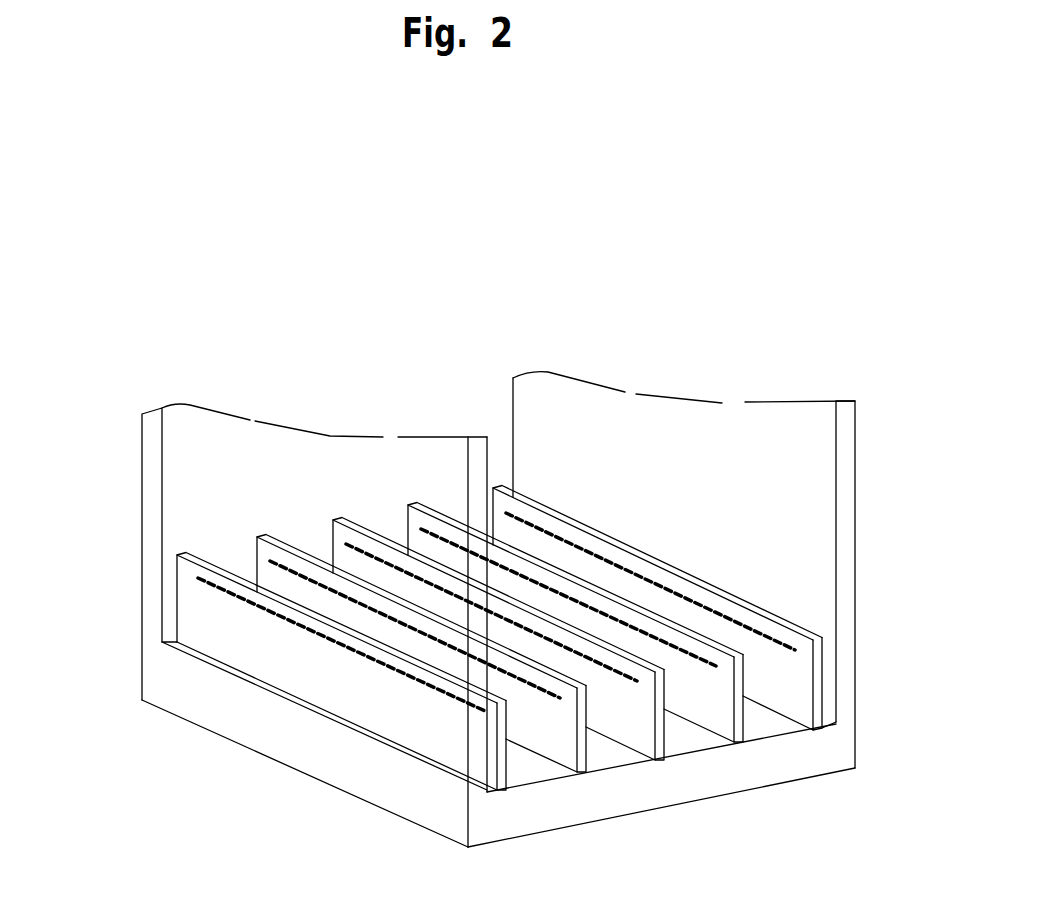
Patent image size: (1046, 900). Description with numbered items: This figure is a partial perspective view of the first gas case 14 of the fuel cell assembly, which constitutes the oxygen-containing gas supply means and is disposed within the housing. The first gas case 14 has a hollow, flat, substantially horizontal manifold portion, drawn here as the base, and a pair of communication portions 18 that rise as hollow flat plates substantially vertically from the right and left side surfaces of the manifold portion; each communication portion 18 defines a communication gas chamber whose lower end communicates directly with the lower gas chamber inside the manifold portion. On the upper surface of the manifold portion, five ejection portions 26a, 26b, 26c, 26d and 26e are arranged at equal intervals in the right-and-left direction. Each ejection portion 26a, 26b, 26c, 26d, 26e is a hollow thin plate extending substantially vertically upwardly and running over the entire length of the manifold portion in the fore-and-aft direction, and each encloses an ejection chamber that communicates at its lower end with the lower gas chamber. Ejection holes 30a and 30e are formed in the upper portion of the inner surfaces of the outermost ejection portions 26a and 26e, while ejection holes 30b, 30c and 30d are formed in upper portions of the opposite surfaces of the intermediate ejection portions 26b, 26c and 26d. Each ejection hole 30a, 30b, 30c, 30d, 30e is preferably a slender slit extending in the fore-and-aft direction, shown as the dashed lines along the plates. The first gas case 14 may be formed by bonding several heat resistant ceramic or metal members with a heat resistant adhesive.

The first gas case 14 is at (850, 777).
The communication portions 18 is at (140, 474).
The ejection portion 26a is at (533, 783).
The ejection portion 26b is at (610, 760).
The ejection portion 26c is at (683, 747).
The ejection portion 26d is at (750, 717).
The ejection portion 26e is at (805, 670).
The ejection hole 30a is at (227, 565).
The ejection hole 30b is at (257, 567).
The ejection hole 30c is at (336, 545).
The ejection hole 30d is at (624, 620).
The ejection hole 30e is at (700, 588).